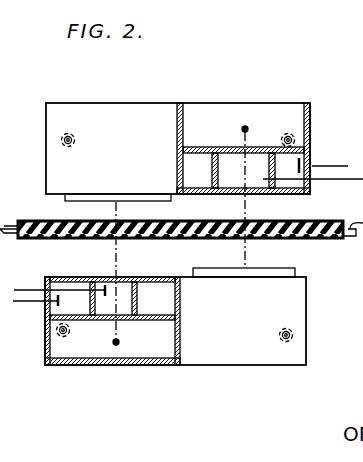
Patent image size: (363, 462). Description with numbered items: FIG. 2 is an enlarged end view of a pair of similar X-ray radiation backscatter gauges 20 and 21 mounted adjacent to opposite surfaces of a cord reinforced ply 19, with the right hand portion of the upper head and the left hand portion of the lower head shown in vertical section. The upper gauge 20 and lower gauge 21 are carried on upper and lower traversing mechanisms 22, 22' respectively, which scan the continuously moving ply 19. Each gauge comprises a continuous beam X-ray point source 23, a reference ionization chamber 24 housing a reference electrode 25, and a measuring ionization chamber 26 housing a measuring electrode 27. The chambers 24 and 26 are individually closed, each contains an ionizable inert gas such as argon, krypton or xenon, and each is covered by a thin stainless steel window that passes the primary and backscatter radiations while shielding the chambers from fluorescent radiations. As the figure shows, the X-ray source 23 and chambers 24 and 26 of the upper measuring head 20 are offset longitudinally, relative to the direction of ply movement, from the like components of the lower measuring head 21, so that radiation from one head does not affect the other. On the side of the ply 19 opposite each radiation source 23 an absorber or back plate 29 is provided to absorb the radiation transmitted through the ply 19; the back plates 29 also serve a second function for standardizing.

The cord reinforced ply 19 is at (327, 240).
The X-ray radiation backscatter gauge 20 is at (42, 115).
The X-ray radiation backscatter gauge 21 is at (42, 362).
The upper traversing mechanism 22 is at (40, 142).
The lower traversing mechanism 22' is at (181, 251).
The continuous beam X-ray point source 23 is at (245, 129).
The reference ionization chamber 24 is at (233, 183).
The reference electrode 25 is at (262, 172).
The measuring ionization chamber 26 is at (307, 188).
The measuring electrode 27 is at (307, 163).
The back plate 29 is at (65, 199).